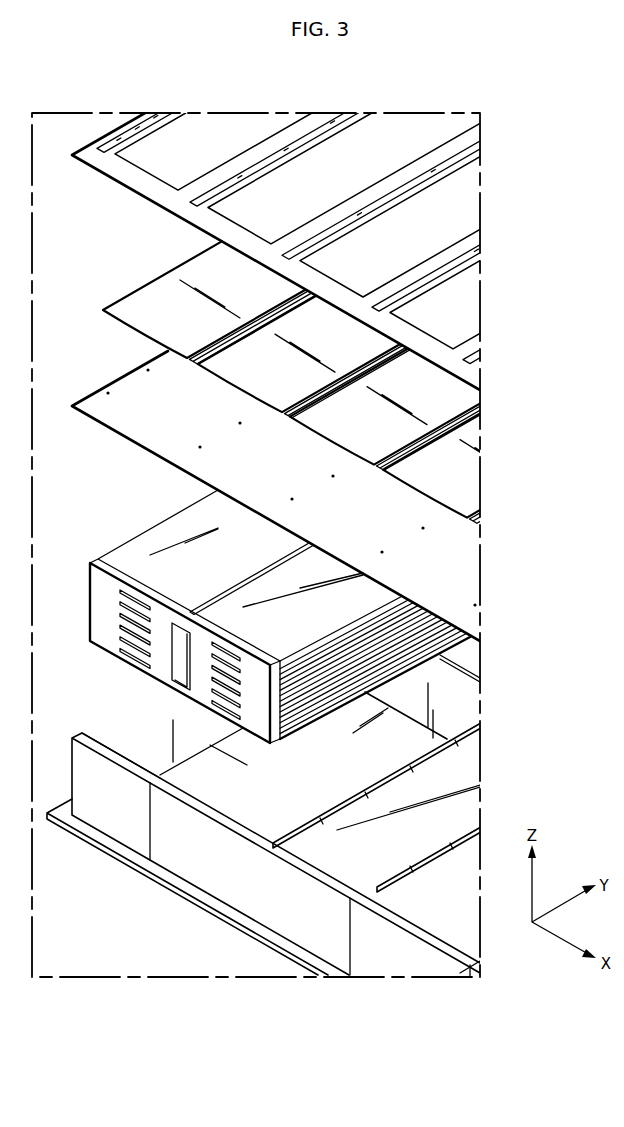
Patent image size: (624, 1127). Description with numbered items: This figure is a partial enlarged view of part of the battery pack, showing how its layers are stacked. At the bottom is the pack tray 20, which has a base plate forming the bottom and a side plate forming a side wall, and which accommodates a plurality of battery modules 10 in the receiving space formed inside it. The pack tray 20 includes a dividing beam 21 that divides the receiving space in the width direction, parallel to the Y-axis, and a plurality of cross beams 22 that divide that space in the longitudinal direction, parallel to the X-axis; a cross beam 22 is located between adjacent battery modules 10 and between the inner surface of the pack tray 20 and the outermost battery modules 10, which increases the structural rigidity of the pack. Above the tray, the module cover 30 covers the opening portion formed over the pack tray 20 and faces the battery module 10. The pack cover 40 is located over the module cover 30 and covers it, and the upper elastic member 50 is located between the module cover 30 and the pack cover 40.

The battery module 10 is at (164, 549).
The pack tray 20 is at (182, 884).
The dividing beam 21 is at (455, 680).
The cross beam 22 is at (126, 739).
The module cover 30 is at (131, 394).
The pack cover 40 is at (200, 129).
The upper elastic member 50 is at (164, 289).